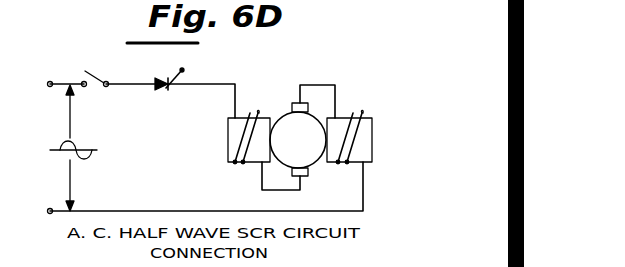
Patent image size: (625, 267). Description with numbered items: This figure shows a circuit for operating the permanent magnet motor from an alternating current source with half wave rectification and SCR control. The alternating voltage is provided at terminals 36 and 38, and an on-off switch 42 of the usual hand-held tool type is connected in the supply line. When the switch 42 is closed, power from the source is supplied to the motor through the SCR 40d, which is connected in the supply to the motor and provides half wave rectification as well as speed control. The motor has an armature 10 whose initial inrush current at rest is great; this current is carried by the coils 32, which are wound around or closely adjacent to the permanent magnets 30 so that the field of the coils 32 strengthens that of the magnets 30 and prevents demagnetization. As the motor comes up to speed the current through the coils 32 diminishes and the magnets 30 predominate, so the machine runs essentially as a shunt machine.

The motor armature 10 is at (308, 147).
The permanent magnets 30 is at (233, 140).
The coils 32 is at (246, 115).
The terminal 36 is at (50, 81).
The terminal 38 is at (48, 208).
The SCR element 40d is at (160, 85).
The on-off switch 42 is at (94, 90).